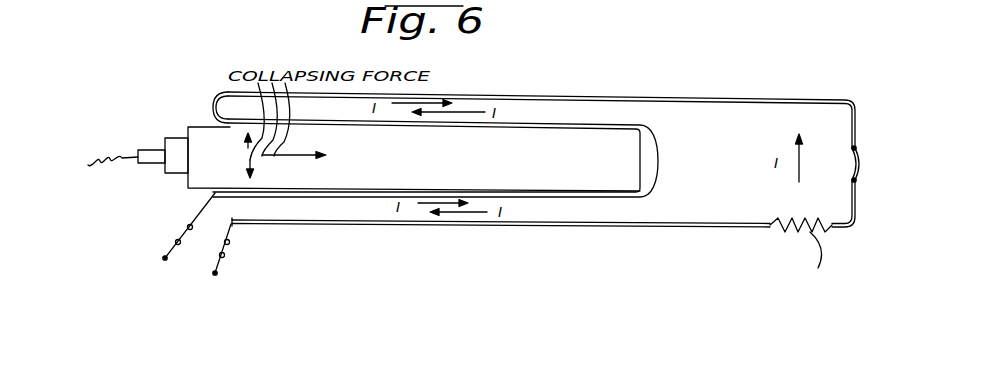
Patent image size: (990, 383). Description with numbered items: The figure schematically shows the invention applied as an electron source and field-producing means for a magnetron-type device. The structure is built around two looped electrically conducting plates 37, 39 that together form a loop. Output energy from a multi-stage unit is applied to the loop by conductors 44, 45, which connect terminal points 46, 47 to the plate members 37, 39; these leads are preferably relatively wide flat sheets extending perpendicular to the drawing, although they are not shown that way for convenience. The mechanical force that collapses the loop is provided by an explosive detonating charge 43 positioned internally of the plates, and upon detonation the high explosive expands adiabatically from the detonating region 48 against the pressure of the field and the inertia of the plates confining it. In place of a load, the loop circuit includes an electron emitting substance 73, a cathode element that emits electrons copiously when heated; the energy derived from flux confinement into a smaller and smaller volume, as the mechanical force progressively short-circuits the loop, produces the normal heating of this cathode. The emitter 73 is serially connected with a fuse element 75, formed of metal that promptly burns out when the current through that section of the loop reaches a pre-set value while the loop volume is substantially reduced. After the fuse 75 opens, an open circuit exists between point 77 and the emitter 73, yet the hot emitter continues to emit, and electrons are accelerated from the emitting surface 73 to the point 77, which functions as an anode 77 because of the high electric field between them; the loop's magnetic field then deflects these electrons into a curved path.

The looped electrically conducting plate 37 is at (519, 123).
The looped electrically conducting plate 39 is at (575, 97).
The explosive detonating charge 43 is at (212, 133).
The conductor 44 is at (198, 214).
The conductor 45 is at (230, 233).
The terminal point 46 is at (165, 258).
The terminal point 47 is at (215, 273).
The detonating region 48 is at (147, 153).
The electron emitting substance 73 is at (807, 232).
The fuse element 75 is at (859, 168).
The anode 77 is at (856, 147).